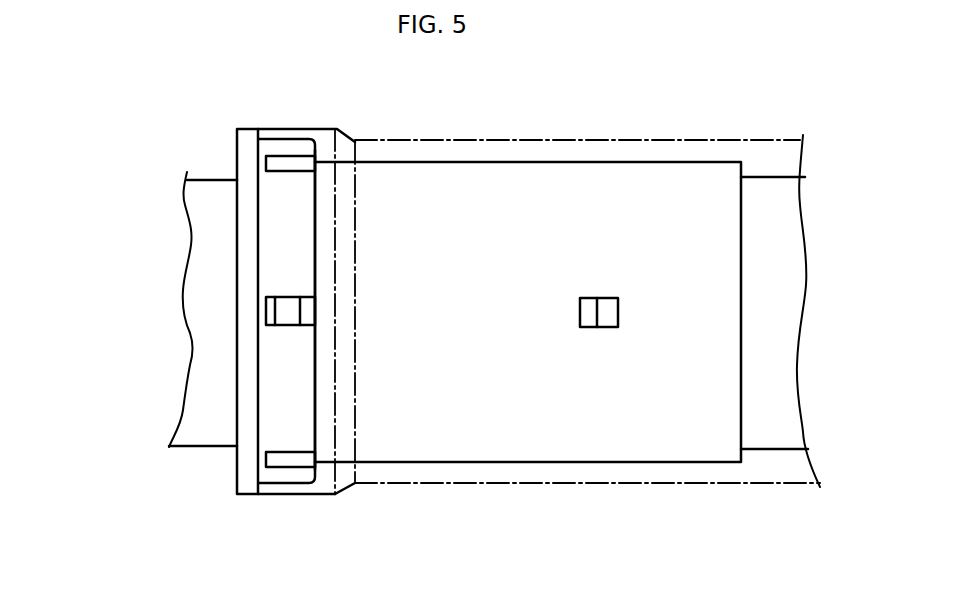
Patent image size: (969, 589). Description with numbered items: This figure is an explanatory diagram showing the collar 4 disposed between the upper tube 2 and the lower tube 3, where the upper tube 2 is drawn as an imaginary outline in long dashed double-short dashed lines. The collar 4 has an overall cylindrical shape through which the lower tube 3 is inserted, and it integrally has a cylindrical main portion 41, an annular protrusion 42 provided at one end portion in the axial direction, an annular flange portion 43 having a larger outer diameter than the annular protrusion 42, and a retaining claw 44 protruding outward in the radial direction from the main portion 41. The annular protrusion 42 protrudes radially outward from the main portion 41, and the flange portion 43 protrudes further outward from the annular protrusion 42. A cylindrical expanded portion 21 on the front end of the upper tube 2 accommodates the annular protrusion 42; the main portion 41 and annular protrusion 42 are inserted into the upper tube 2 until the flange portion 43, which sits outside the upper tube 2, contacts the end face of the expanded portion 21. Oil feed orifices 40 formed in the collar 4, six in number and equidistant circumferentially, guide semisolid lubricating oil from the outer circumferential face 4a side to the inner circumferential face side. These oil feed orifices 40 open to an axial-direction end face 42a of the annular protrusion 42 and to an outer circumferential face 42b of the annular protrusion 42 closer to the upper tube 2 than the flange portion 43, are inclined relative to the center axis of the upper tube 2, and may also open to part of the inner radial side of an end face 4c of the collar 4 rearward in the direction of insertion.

The upper tube 2 is at (753, 140).
The lower tube 3 is at (213, 192).
The collar 4 is at (212, 481).
The outer circumferential face 4a is at (603, 195).
The end face 4c is at (237, 384).
The expanded portion 21 is at (277, 495).
The oil feed orifices 40 is at (296, 145).
The main portion 41 is at (510, 161).
The annular protrusion 42 is at (287, 152).
The axial-direction end face 42a is at (316, 218).
The outer circumferential face 42b is at (280, 252).
The flange portion 43 is at (247, 130).
The retaining claw 44 is at (593, 305).